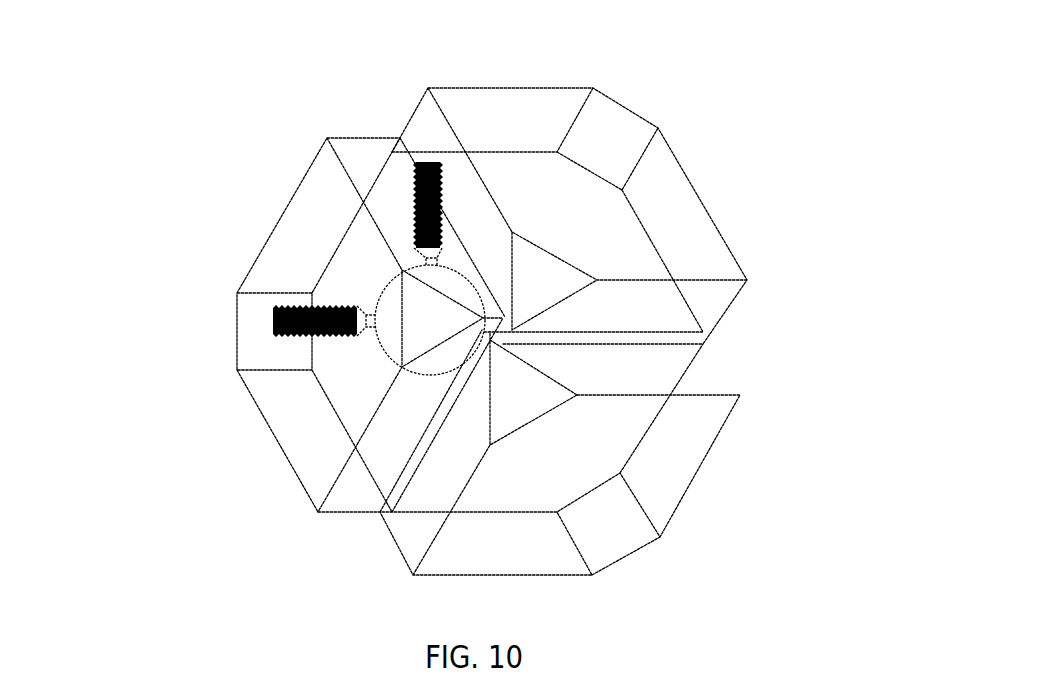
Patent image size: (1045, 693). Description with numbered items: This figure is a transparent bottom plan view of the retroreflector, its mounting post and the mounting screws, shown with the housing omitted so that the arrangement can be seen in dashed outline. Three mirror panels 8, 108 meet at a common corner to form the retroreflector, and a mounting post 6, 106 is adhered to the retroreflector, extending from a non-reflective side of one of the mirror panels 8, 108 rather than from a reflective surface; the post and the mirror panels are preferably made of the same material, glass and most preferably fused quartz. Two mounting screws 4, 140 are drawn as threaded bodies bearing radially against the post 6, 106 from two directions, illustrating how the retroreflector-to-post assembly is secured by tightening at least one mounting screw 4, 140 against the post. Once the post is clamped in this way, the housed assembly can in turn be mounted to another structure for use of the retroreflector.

The mirror panels 8 is at (305, 218).
The mirror panels 108 is at (490, 331).
The mounting post 6 is at (423, 345).
The post 106 is at (258, 395).
The mounting screw 4 is at (418, 178).
The another structure 140 is at (237, 199).